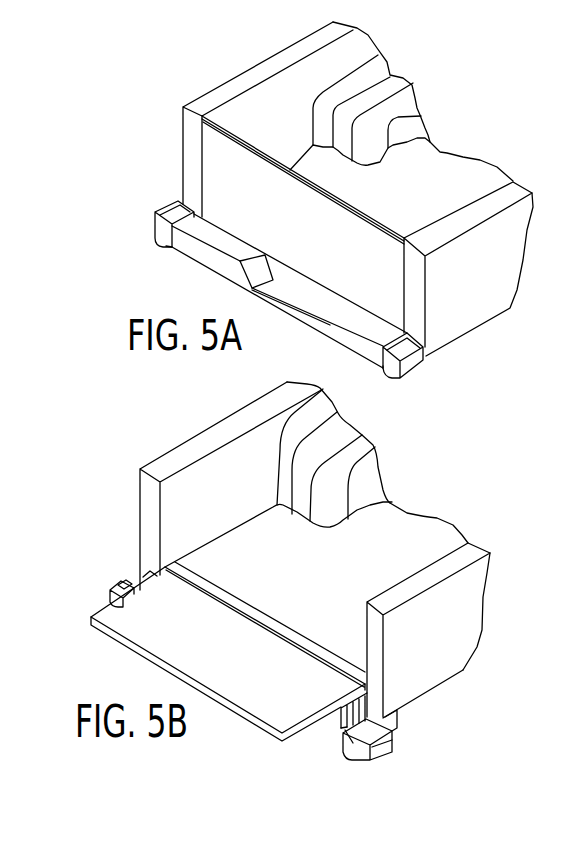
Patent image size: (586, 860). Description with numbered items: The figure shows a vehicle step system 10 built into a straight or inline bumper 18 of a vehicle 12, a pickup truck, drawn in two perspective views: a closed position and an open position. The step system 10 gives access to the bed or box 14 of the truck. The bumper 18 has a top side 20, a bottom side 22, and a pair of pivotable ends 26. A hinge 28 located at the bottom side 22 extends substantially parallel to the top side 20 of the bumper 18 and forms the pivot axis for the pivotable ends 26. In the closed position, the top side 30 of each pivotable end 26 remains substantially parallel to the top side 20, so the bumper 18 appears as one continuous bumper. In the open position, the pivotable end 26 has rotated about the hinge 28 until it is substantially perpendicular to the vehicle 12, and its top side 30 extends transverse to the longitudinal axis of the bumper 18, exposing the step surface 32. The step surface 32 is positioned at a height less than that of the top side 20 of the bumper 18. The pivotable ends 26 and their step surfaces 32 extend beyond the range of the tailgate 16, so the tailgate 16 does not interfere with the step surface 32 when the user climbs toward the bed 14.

In FIG. 5A, the vehicle step system 10 is at (280, 267).
In FIG. 5B, the vehicle step system 10 is at (265, 665).
In FIG. 5A, the vehicle 12 is at (485, 315).
In FIG. 5B, the vehicle 12 is at (480, 581).
In FIG. 5B, the bed or box 14 is at (418, 537).
In FIG. 5A, the tailgate 16 is at (377, 213).
In FIG. 5B, the tailgate 16 is at (262, 727).
In FIG. 5A, the bumper 18 is at (285, 302).
In FIG. 5B, the bumper 18 is at (222, 661).
In FIG. 5A, the top side 20 is at (352, 317).
In FIG. 5B, the top side 20 is at (147, 572).
In FIG. 5A, the bottom side 22 is at (330, 345).
In FIG. 5B, the bottom side 22 is at (328, 723).
In FIG. 5A, the pivotable end 26 is at (160, 230).
In FIG. 5B, the pivotable end 26 is at (353, 743).
In FIG. 5A, the hinge 28 is at (173, 247).
In FIG. 5B, the hinge 28 is at (345, 730).
In FIG. 5A, the top side of the end 30 is at (177, 200).
In FIG. 5B, the top side of the end 30 is at (105, 601).
In FIG. 5B, the step surface 32 is at (122, 584).